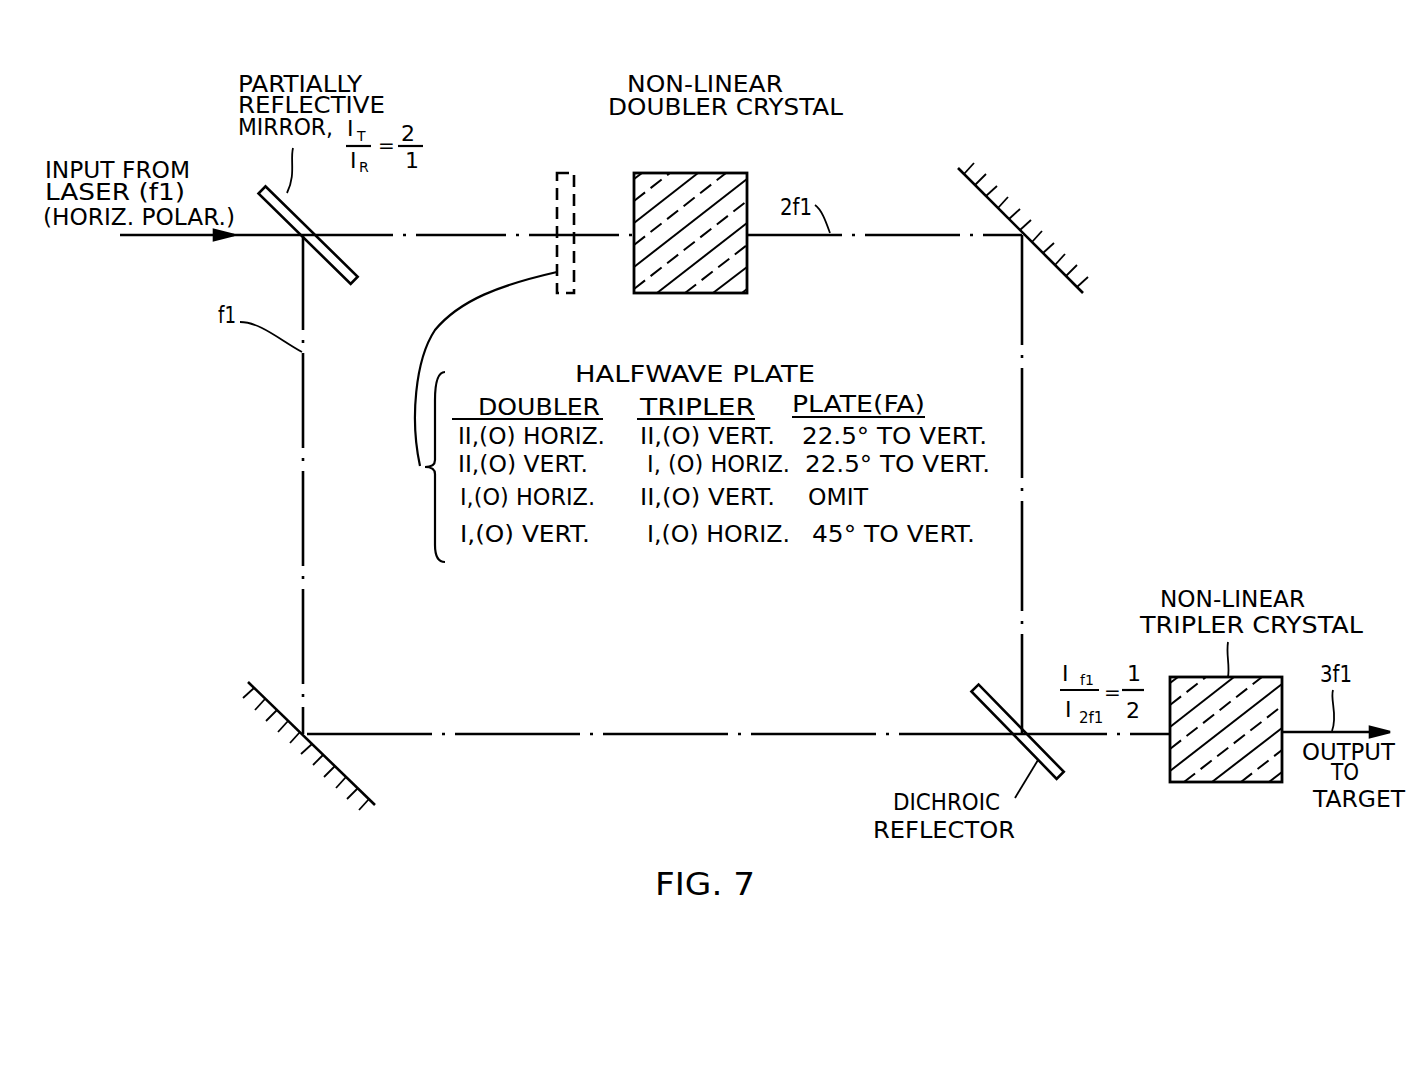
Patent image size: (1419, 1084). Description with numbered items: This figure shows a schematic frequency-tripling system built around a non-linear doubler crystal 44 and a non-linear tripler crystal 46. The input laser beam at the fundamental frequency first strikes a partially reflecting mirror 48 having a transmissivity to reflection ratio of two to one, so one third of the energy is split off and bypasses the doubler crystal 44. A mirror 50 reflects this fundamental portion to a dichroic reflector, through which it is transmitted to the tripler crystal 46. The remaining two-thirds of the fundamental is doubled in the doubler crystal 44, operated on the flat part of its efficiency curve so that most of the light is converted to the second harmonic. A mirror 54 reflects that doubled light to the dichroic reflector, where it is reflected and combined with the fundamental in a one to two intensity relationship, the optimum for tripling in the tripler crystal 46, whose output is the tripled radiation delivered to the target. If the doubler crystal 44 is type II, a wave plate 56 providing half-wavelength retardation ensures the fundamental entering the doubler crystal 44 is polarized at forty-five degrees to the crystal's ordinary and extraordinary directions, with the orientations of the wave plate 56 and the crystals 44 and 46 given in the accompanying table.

The non-linear doubler crystal 44 is at (693, 173).
The non-linear tripler crystal 46 is at (1203, 783).
The partially reflecting mirror 48 is at (345, 262).
The mirror 50 is at (363, 790).
The mirror 54 is at (977, 190).
The wave plate 56 is at (557, 183).